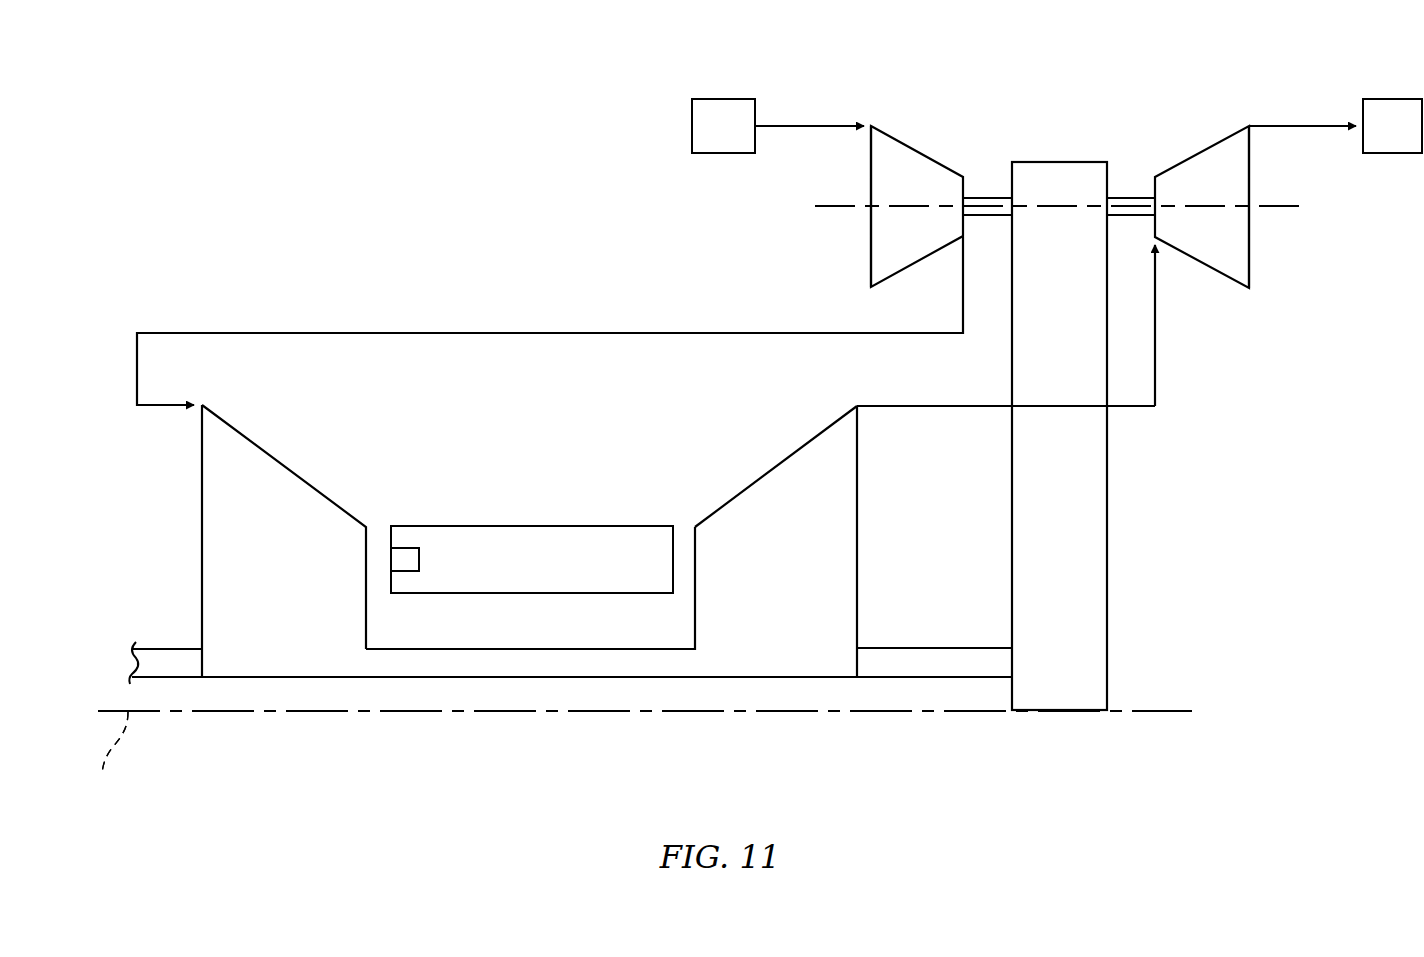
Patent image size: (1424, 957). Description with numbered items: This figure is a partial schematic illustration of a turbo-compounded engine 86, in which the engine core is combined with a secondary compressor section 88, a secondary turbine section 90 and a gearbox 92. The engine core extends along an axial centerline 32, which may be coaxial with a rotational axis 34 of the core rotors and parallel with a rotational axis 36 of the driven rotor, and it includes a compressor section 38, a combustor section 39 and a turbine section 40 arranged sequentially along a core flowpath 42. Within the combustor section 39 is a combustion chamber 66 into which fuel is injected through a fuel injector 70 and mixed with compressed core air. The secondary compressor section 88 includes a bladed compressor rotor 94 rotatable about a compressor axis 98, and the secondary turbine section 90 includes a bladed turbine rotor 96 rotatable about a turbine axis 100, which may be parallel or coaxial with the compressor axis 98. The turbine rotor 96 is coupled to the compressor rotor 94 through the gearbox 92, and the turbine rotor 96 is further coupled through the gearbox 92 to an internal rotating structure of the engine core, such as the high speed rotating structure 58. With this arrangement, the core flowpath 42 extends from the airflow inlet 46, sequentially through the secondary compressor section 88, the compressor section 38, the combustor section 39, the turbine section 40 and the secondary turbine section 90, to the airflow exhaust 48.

The turbo-compounded engine 86 is at (201, 200).
The core flowpath 42 is at (482, 333).
The compressor section 38 is at (318, 460).
The combustor section 39 is at (540, 497).
The turbine section 40 is at (751, 471).
The combustion chamber 66 is at (517, 569).
The fuel injector 70 is at (390, 562).
The high speed rotating structure 58 is at (632, 692).
The axial centerline 32 is at (128, 712).
The rotational axis 34 is at (115, 742).
The rotational axis 36 is at (115, 742).
The gearbox 92 is at (1119, 517).
The secondary compressor section 88 is at (930, 146).
The secondary turbine section 90 is at (1190, 146).
The bladed compressor rotor 94 is at (869, 250).
The bladed turbine rotor 96 is at (1250, 251).
The compressor axis 98 is at (827, 206).
The turbine axis 100 is at (1290, 206).
The airflow inlet 46 is at (710, 140).
The airflow exhaust 48 is at (1379, 140).